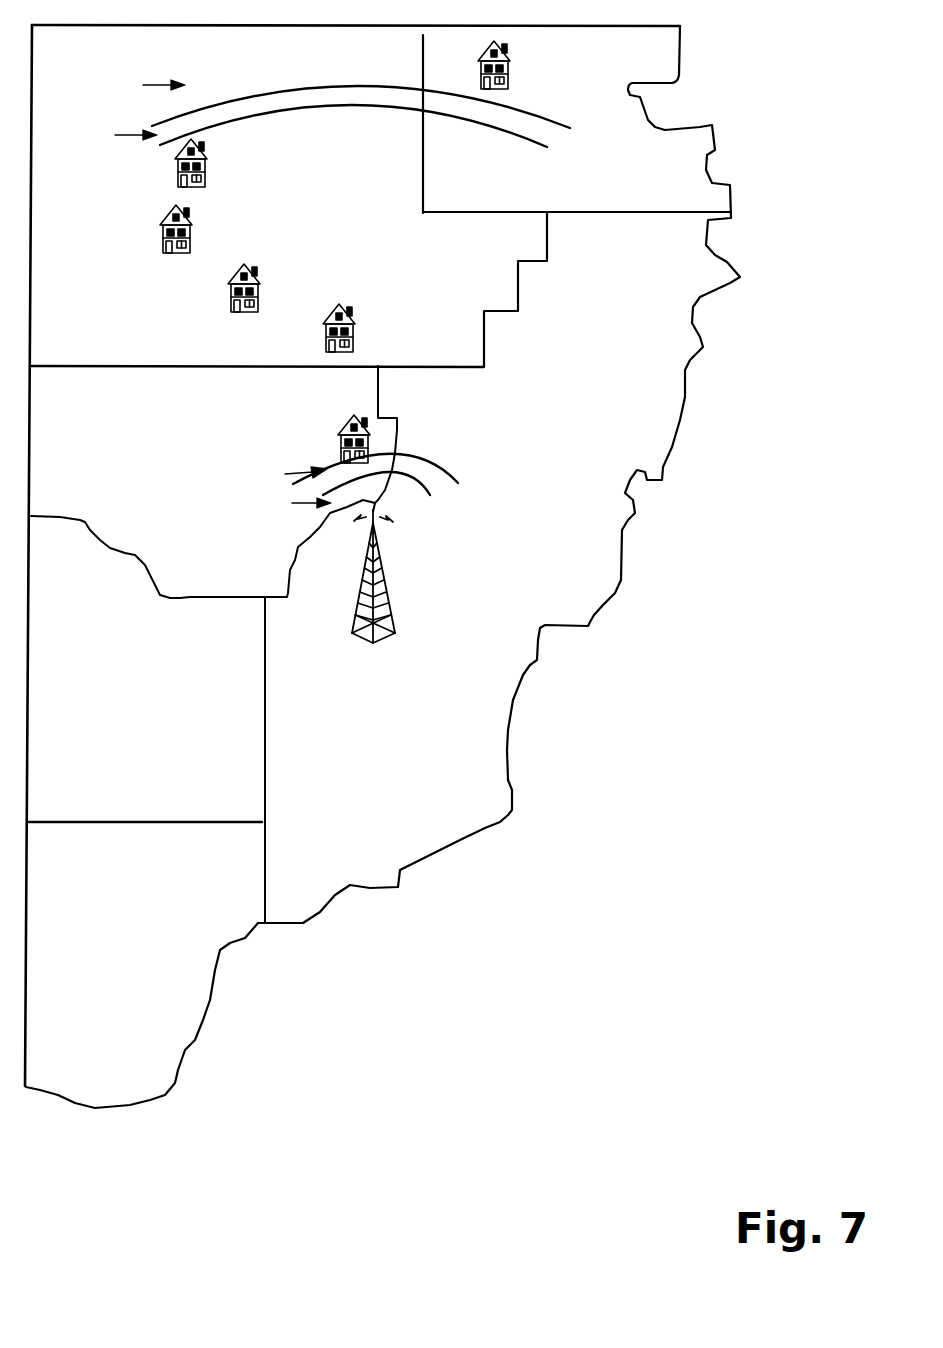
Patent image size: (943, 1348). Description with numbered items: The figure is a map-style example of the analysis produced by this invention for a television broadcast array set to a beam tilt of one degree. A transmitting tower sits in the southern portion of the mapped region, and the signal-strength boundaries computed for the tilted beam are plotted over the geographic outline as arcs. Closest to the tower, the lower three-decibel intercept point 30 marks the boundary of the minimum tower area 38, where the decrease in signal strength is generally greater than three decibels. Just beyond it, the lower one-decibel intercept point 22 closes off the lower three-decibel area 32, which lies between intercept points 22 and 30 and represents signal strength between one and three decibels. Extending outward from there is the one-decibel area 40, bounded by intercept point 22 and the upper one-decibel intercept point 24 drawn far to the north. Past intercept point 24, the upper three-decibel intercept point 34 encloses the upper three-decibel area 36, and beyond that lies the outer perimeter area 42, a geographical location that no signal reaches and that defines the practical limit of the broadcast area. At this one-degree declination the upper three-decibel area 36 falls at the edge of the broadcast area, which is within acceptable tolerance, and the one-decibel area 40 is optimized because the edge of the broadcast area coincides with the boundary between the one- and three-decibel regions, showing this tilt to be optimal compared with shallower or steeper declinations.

The lower 1 (dB) intercept point 22 is at (437, 467).
The upper 1 (dB) intercept point 24 is at (537, 137).
The lower 3 (dB) intercept point 30 is at (423, 485).
The lower 3 (dB) area 32 is at (289, 475).
The upper 3 (dB) intercept point 34 is at (530, 108).
The upper 3 (dB) area 36 is at (119, 136).
The minimum tower area 38 is at (294, 504).
The 1 (dB) area 40 is at (212, 341).
The outer perimeter area 42 is at (146, 86).